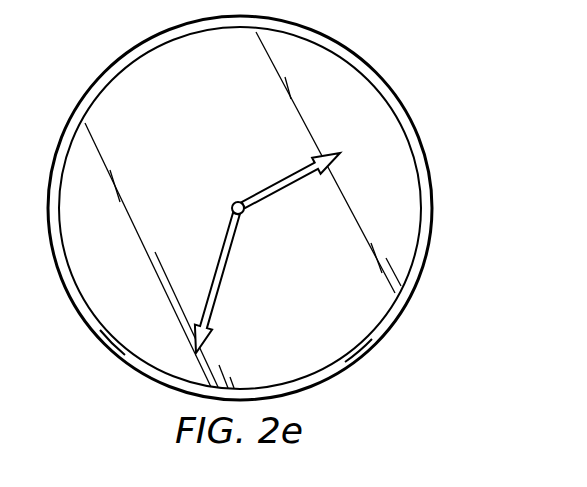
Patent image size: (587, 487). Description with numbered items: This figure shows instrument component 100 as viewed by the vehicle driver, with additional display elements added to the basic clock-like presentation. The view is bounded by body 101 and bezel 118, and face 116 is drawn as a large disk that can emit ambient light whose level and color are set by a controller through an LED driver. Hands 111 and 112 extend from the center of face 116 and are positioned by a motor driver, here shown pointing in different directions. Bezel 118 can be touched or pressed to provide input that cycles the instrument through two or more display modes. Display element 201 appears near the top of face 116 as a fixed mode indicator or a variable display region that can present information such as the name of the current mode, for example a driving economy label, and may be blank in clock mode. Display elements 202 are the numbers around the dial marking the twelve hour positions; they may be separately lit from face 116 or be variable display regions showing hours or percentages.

The instrument component 100 is at (455, 107).
The body 101 is at (122, 57).
The hand 111 is at (283, 190).
The hand 112 is at (229, 263).
The face 116 is at (355, 327).
The bezel 118 is at (112, 343).
The display element 201 is at (240, 123).
The display elements 202 is at (100, 278).